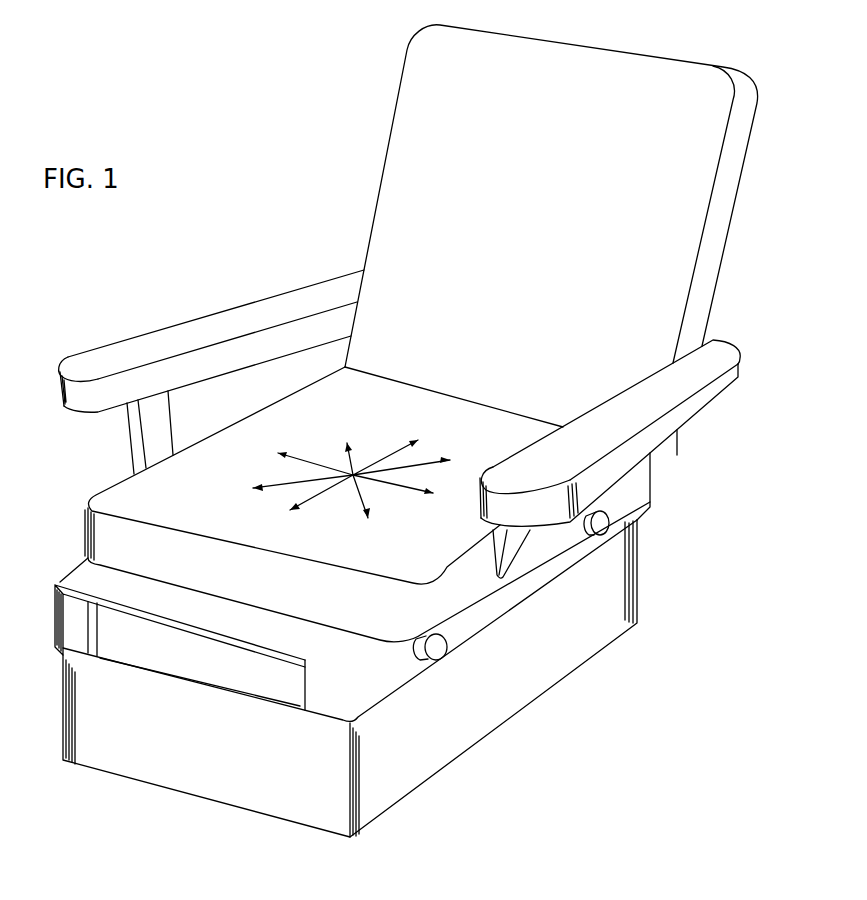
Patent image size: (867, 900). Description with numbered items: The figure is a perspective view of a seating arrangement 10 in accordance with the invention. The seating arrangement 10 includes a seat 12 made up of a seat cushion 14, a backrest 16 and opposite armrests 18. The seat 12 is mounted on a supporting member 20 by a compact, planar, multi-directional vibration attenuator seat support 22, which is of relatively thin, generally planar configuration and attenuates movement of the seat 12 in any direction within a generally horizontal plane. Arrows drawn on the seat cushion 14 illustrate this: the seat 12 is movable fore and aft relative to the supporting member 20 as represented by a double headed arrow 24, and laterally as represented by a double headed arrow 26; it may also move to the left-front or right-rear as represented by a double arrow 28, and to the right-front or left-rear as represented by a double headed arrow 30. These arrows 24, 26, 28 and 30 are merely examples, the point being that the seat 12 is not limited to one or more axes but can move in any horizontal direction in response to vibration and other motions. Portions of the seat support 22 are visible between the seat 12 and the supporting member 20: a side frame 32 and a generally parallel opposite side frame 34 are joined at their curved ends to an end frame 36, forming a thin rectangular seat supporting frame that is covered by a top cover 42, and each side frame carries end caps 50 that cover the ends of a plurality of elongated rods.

The seating arrangement 10 is at (316, 226).
The seat 12 is at (337, 504).
The seat cushion 14 is at (272, 422).
The backrest 16 is at (396, 136).
The armrests 18 is at (193, 318).
The supporting member 20 is at (510, 697).
The vibration attenuator seat support 22 is at (123, 636).
The double headed arrow 24 is at (314, 498).
The double headed arrow 26 is at (390, 485).
The double arrow 28 is at (348, 450).
The double headed arrow 30 is at (275, 489).
The side frame 32 is at (328, 628).
The side frame 34 is at (72, 612).
The end frame 36 is at (272, 674).
The top cover 42 is at (61, 583).
The end cap 50 is at (441, 650).